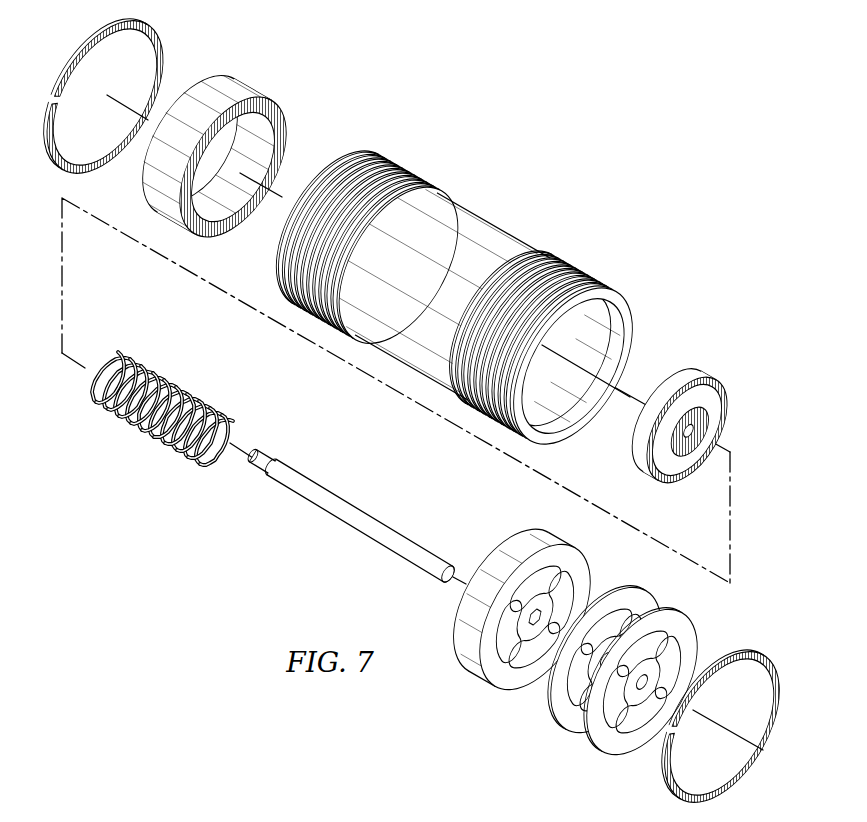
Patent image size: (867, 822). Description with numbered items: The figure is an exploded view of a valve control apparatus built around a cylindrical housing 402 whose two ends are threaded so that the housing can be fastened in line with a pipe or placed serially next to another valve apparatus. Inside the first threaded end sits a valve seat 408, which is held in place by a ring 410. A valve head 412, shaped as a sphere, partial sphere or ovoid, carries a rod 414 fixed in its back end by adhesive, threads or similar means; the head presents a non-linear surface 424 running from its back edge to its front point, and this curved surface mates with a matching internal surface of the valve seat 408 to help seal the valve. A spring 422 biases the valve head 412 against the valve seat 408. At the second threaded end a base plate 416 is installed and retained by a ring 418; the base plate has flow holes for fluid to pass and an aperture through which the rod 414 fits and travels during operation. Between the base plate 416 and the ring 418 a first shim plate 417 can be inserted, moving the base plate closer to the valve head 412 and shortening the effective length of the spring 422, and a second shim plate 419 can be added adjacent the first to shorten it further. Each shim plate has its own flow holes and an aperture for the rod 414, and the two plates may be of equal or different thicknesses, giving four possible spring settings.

The cylindrical housing 402 is at (454, 297).
The valve seat 408 is at (237, 90).
The ring 410 is at (163, 65).
The valve head 412 is at (668, 412).
The rod 414 is at (353, 500).
The base plate 416 is at (415, 450).
The first shim plate 417 is at (604, 656).
The ring 418 is at (763, 653).
The second shim plate 419 is at (641, 681).
The spring 422 is at (180, 383).
The non-linear surface 424 is at (642, 418).